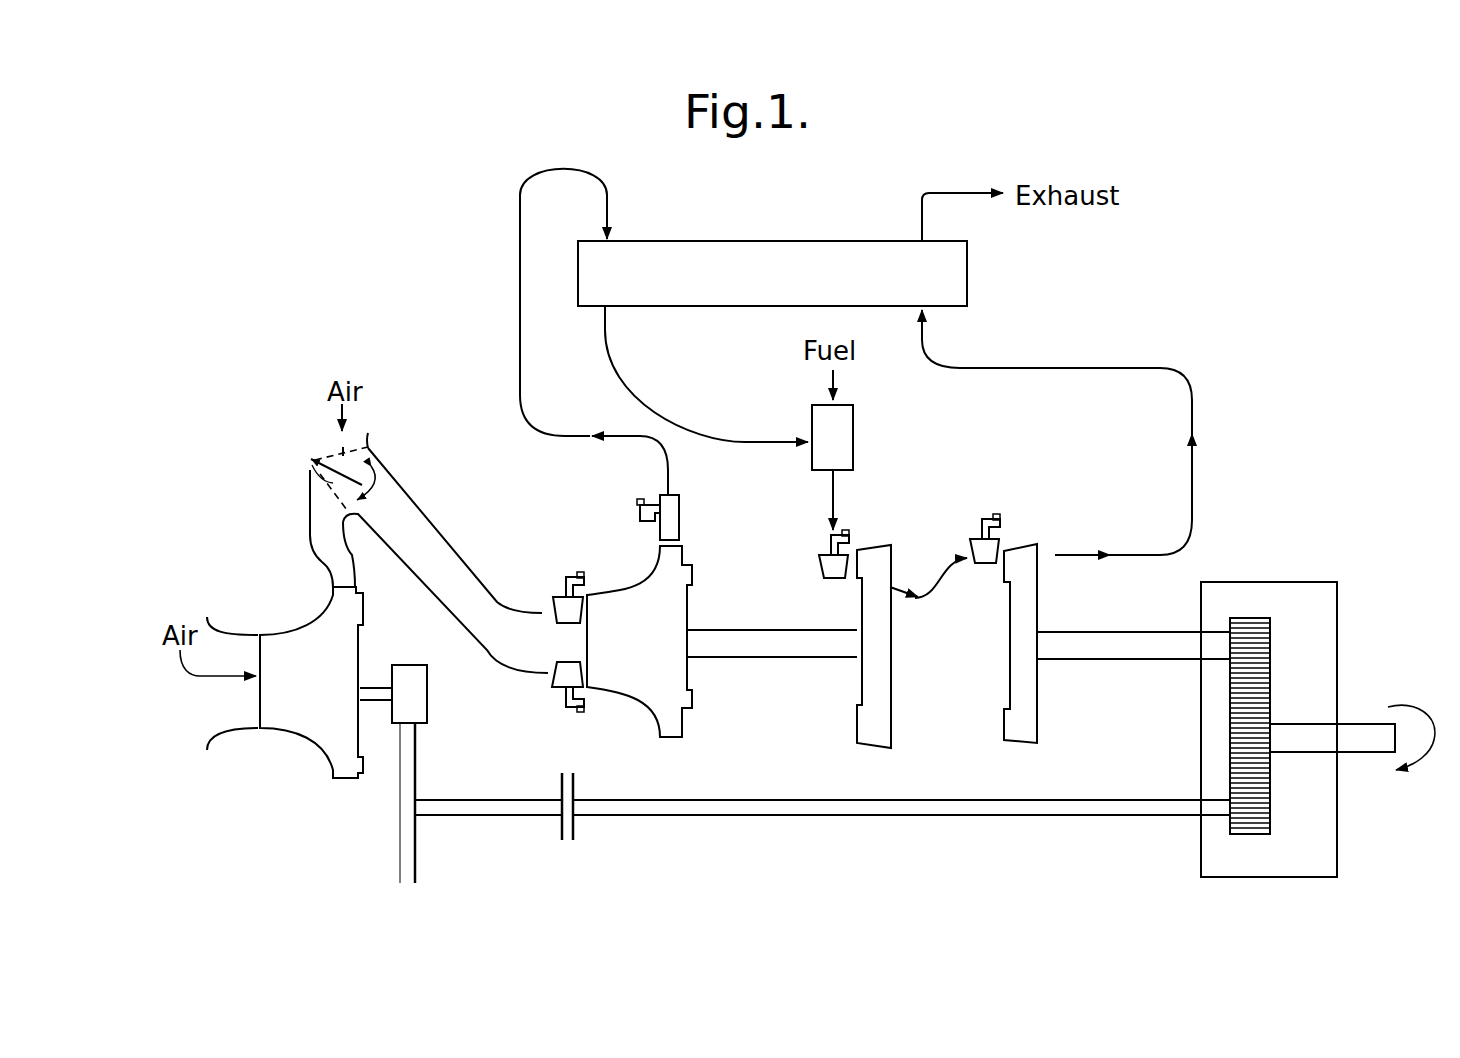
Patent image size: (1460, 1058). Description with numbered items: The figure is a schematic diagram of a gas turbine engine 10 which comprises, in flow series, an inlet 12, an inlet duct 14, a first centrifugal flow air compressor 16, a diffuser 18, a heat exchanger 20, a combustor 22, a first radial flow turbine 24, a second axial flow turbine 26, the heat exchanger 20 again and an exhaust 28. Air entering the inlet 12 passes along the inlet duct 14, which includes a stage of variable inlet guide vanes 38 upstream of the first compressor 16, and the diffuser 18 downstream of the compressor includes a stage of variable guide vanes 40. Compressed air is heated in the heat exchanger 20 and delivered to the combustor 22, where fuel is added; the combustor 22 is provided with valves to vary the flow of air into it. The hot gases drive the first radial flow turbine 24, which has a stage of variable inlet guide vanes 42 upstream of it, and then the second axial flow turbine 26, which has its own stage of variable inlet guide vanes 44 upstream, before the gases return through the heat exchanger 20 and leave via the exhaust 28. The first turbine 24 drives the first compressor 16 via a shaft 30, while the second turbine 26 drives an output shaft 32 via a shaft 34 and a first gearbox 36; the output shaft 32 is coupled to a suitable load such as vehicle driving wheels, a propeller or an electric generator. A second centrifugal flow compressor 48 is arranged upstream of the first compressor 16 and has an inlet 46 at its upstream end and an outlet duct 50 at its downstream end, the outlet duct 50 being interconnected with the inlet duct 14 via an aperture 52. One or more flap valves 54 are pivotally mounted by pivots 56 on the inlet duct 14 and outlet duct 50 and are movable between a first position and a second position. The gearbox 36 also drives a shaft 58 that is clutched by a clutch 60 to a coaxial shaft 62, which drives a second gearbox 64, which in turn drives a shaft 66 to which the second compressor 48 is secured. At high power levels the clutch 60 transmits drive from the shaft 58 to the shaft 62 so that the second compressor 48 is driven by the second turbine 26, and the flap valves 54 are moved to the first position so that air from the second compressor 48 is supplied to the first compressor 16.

The gas turbine engine 10 is at (360, 338).
The inlet 12 is at (345, 449).
The inlet duct 14 is at (435, 537).
The first centrifugal flow air compressor 16 is at (694, 708).
The diffuser 18 is at (680, 500).
The heat exchanger 20 is at (782, 241).
The combustor 22 is at (855, 431).
The first radial flow turbine 24 is at (858, 745).
The second axial flow turbine 26 is at (1026, 743).
The exhaust 28 is at (1003, 200).
The shaft 30 is at (783, 630).
The output shaft 32 is at (1353, 724).
The shaft 34 is at (1175, 641).
The first gearbox 36 is at (1282, 582).
The variable inlet guide vanes 38 is at (552, 600).
The variable guide vanes 40 is at (637, 497).
The variable inlet guide vanes 42 is at (820, 558).
The variable inlet guide vanes 44 is at (1002, 539).
The inlet 46 is at (215, 733).
The second centrifugal flow compressor 48 is at (313, 753).
The outlet duct 50 is at (310, 522).
The aperture 52 is at (330, 490).
The flap valves 54 is at (310, 465).
The pivots 56 is at (308, 458).
The shaft 58 is at (932, 808).
The clutch 60 is at (575, 835).
The shaft 62 is at (453, 805).
The second gearbox 64 is at (428, 692).
The shaft 66 is at (373, 688).